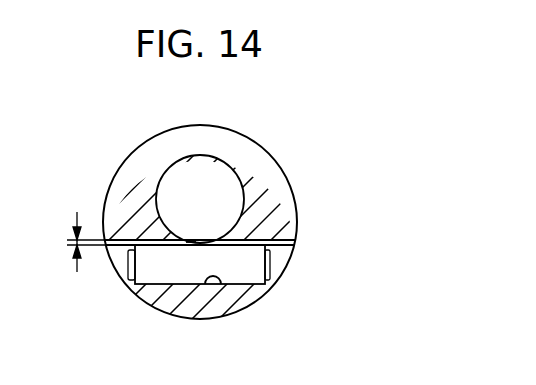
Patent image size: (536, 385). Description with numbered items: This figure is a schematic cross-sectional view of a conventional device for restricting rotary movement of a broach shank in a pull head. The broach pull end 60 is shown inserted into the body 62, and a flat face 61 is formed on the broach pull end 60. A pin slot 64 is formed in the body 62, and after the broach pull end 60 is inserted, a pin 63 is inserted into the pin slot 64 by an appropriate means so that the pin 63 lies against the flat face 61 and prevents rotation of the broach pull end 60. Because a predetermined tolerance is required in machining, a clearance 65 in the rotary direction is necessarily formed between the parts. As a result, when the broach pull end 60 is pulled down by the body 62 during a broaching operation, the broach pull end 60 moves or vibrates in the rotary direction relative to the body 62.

The broach pull end 60 is at (228, 193).
The flat face 61 is at (190, 243).
The body 62 is at (230, 135).
The pin 63 is at (247, 267).
The pin slot 64 is at (220, 280).
The clearance 65 is at (71, 242).